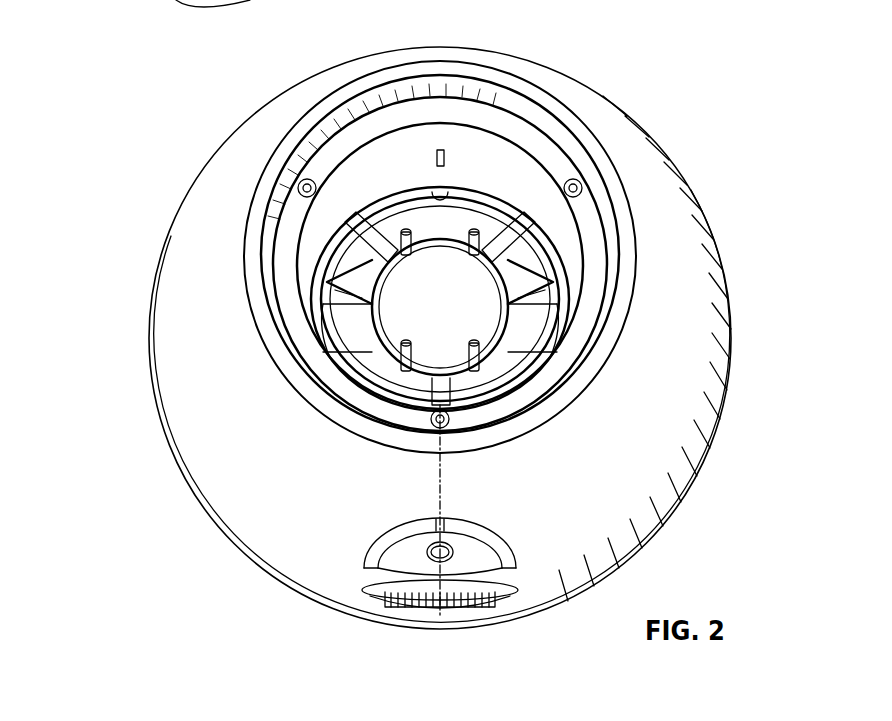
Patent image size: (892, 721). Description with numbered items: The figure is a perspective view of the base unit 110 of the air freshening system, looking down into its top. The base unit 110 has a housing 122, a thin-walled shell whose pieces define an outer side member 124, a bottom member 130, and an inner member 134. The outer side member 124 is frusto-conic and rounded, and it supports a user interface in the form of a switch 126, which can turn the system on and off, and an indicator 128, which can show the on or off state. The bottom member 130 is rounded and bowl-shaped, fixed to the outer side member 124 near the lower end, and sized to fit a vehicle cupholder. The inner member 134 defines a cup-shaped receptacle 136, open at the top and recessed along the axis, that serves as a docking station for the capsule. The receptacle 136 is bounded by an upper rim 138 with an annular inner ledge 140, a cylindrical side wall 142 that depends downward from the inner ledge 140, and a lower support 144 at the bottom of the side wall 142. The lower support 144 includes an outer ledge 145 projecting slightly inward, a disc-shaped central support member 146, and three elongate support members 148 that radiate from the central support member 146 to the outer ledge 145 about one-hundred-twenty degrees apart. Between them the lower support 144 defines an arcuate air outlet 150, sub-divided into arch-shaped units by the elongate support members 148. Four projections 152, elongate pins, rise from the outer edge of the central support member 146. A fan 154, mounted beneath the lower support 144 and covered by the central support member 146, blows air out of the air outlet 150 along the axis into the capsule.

The base unit 110 is at (150, 62).
The housing 122 is at (700, 307).
The outer side member 124 is at (298, 468).
The switch 126 is at (400, 592).
The indicator 128 is at (405, 550).
The bottom member 130 is at (517, 178).
The inner member 134 is at (350, 178).
The receptacle 136 is at (476, 230).
The upper rim 138 is at (630, 246).
The inner ledge 140 is at (592, 318).
The side wall 142 is at (322, 290).
The lower support 144 is at (452, 270).
The outer ledge 145 is at (563, 286).
The central support member 146 is at (460, 322).
The elongate support members 148 is at (367, 272).
The air outlet 150 is at (479, 157).
The projections 152 is at (363, 145).
The fan 154 is at (328, 326).